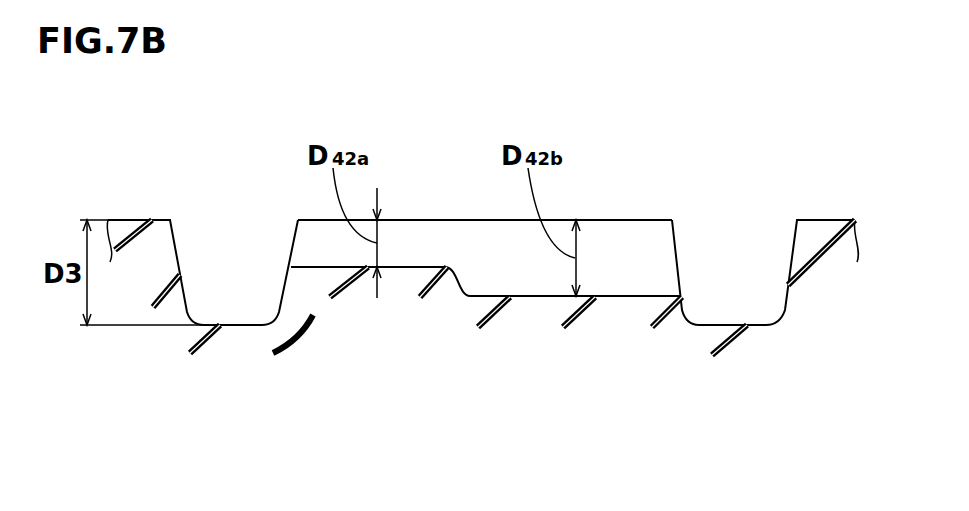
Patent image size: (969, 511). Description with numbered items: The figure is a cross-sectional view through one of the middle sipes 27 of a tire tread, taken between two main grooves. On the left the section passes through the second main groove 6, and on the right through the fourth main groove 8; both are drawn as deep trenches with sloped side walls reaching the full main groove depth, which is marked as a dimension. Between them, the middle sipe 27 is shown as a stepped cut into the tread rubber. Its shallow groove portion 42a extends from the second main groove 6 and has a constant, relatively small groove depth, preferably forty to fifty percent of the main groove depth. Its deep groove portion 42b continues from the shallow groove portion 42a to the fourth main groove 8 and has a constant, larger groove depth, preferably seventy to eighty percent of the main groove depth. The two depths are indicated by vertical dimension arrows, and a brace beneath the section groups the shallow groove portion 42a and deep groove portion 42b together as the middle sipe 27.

The second main groove 6 is at (233, 252).
The fourth main groove 8 is at (733, 252).
The middle sipe 27 is at (486, 335).
The shallow groove portion 42a is at (396, 268).
The deep groove portion 42b is at (576, 342).